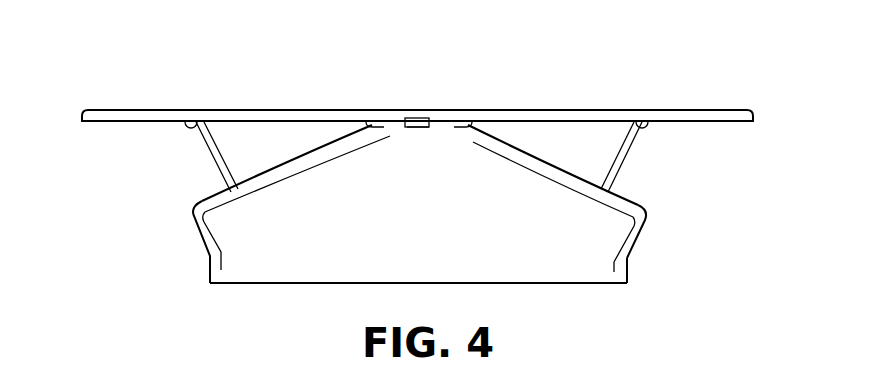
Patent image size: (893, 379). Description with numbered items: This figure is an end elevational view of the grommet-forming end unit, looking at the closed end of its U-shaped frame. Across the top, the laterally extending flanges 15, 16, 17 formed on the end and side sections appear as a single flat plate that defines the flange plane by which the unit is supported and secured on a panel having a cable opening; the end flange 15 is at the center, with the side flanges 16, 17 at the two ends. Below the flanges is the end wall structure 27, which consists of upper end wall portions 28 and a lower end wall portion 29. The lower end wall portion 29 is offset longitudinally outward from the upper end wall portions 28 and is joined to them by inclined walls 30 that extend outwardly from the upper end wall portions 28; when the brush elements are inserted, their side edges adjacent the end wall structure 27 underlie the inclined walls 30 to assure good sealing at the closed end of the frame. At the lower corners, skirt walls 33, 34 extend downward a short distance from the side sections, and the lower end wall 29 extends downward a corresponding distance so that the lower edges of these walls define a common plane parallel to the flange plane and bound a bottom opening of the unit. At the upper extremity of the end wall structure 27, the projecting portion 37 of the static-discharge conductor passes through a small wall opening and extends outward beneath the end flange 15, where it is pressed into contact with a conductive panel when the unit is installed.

The end flange 15 is at (410, 109).
The side flange 16 is at (723, 109).
The side flange 17 is at (114, 109).
The end wall structure 27 is at (419, 207).
The upper end wall portions 28 is at (303, 135).
The lower end wall portion 29 is at (580, 222).
The inclined walls 30 is at (281, 172).
The skirt wall 33 is at (627, 270).
The skirt wall 34 is at (210, 268).
The projecting portion 37 is at (415, 133).